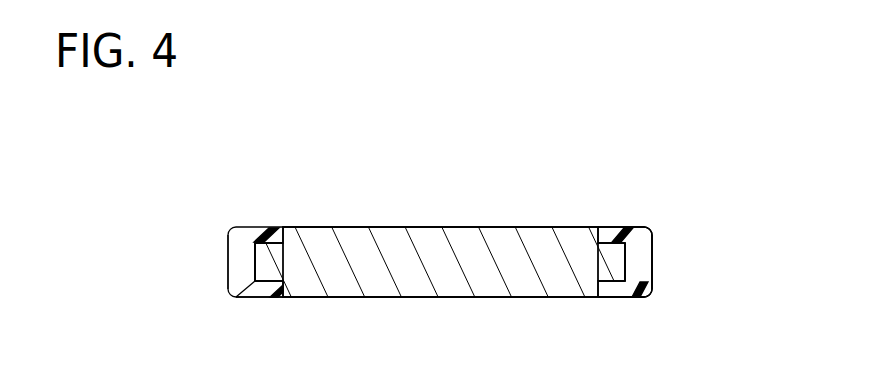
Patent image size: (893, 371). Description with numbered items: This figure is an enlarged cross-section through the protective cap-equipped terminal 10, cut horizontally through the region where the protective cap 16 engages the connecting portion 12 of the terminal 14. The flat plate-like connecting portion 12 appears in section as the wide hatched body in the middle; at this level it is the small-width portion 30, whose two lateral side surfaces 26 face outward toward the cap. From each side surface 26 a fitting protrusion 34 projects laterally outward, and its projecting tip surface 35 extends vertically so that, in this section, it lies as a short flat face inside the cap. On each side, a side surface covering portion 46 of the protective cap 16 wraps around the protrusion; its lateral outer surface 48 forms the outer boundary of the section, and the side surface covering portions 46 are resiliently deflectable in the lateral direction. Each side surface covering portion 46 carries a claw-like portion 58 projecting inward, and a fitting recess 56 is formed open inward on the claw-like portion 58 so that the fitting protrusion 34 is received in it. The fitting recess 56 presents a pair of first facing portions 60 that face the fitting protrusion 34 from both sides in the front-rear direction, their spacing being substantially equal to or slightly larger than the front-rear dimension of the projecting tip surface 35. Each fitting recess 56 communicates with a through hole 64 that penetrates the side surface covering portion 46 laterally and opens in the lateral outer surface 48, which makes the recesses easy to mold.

The protective cap-equipped terminal 10 is at (688, 166).
The connecting portion 12 is at (440, 279).
The small-width portion 30 is at (432, 268).
The terminal 14 is at (492, 220).
The protective cap 16 is at (660, 215).
The side surface 26 is at (252, 262).
The fitting protrusion 34 is at (247, 252).
The projecting tip surface 35 is at (445, 265).
The side surface covering portion 46 is at (241, 218).
The lateral outer surface 48 is at (228, 241).
The fitting recess 56 is at (278, 268).
The claw-like portion 58 is at (267, 303).
The first facing portion 60 is at (263, 233).
The through hole 64 is at (246, 284).